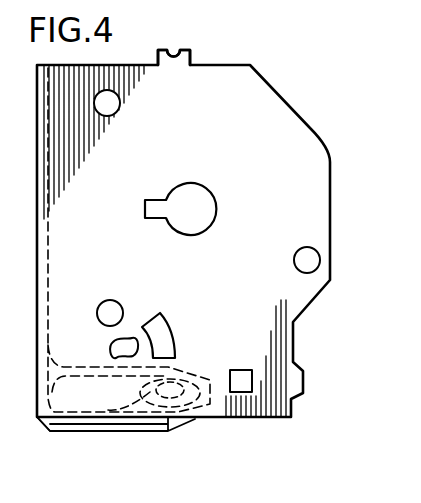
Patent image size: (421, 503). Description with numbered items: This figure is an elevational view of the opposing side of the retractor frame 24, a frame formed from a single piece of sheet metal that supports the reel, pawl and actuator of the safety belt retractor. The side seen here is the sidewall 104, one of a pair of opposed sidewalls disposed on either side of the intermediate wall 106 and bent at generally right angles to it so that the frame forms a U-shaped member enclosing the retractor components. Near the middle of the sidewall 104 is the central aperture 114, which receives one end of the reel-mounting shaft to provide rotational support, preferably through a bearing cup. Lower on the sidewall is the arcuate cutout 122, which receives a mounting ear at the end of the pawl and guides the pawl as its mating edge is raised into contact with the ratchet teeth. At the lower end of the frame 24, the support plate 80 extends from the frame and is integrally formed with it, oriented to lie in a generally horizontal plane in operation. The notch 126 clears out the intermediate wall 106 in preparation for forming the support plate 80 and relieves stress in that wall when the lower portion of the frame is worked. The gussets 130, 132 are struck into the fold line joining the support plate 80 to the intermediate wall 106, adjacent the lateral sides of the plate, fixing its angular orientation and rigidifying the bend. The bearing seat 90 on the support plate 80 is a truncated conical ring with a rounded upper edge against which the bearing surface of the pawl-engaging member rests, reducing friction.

The sidewall 104 is at (312, 128).
The retractor frame 24 is at (222, 65).
The notch 126 is at (178, 49).
The central aperture 114 is at (190, 198).
The intermediate wall 106 is at (50, 290).
The gusset 130 is at (58, 350).
The arcuate cutout 122 is at (168, 332).
The bearing seat 90 is at (132, 406).
The support plate 80 is at (95, 431).
The gusset 132 is at (52, 430).